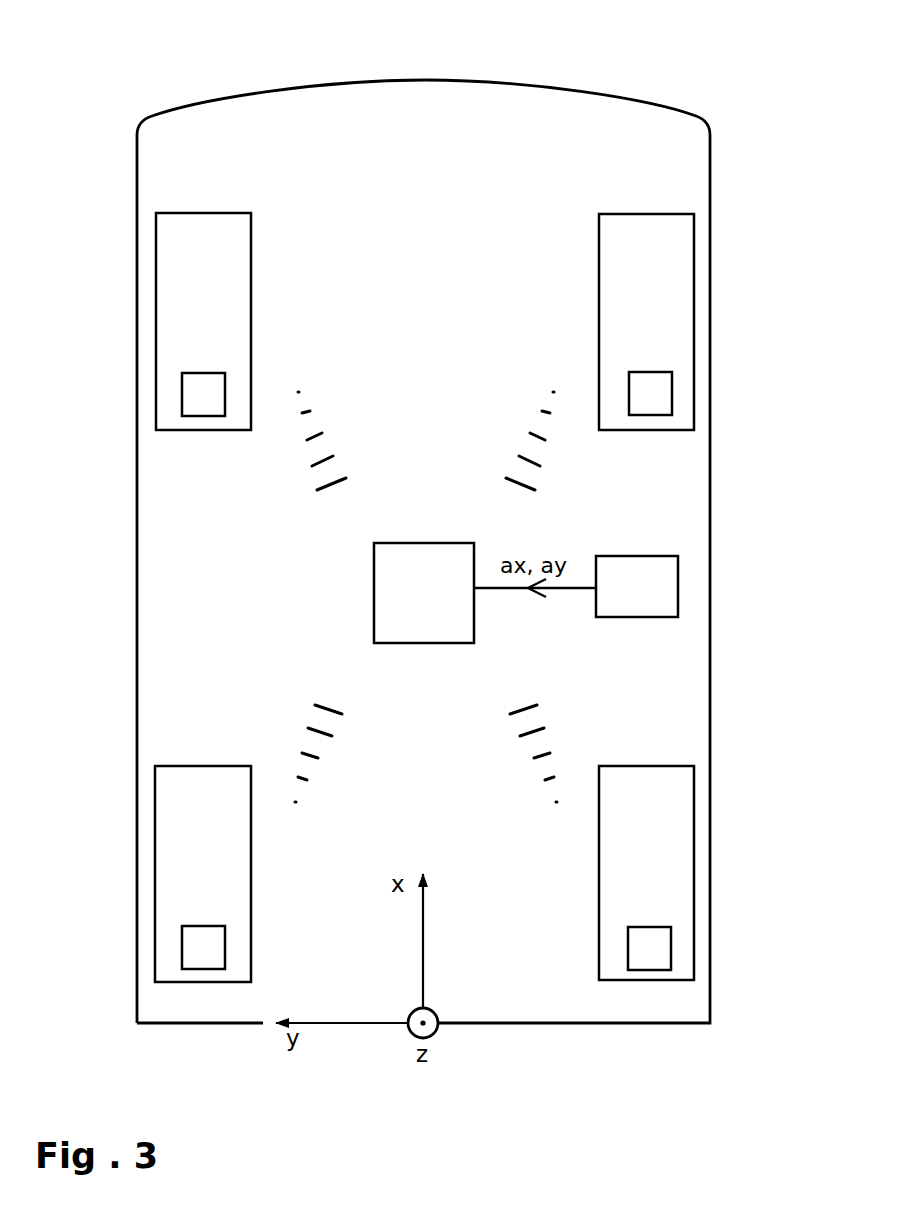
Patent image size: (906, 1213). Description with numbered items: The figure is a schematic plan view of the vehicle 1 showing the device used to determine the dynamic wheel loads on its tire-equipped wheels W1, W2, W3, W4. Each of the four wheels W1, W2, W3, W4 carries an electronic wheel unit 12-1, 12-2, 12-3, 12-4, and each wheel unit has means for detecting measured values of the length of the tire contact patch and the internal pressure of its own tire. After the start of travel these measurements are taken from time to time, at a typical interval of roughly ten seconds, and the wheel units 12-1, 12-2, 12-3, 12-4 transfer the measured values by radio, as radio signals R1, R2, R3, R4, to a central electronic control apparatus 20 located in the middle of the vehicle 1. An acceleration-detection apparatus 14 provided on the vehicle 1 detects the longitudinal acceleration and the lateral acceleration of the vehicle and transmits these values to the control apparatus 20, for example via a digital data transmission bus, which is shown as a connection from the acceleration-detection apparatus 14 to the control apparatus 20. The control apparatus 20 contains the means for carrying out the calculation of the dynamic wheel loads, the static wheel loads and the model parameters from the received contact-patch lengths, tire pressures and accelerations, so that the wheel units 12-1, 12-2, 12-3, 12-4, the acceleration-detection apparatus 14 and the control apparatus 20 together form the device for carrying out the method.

The vehicle 1 is at (155, 42).
The wheel W1 is at (178, 292).
The wheel W2 is at (672, 297).
The wheel W3 is at (183, 837).
The wheel W4 is at (677, 834).
The electronic wheel unit 12-1 is at (193, 388).
The electronic wheel unit 12-2 is at (663, 385).
The electronic wheel unit 12-3 is at (193, 943).
The electronic wheel unit 12-4 is at (660, 943).
The acceleration-detection apparatus 14 is at (622, 605).
The central electronic control apparatus 20 is at (409, 606).
The radio signal R1 is at (333, 492).
The radio signal R2 is at (519, 492).
The radio signal R3 is at (342, 672).
The radio signal R4 is at (522, 700).